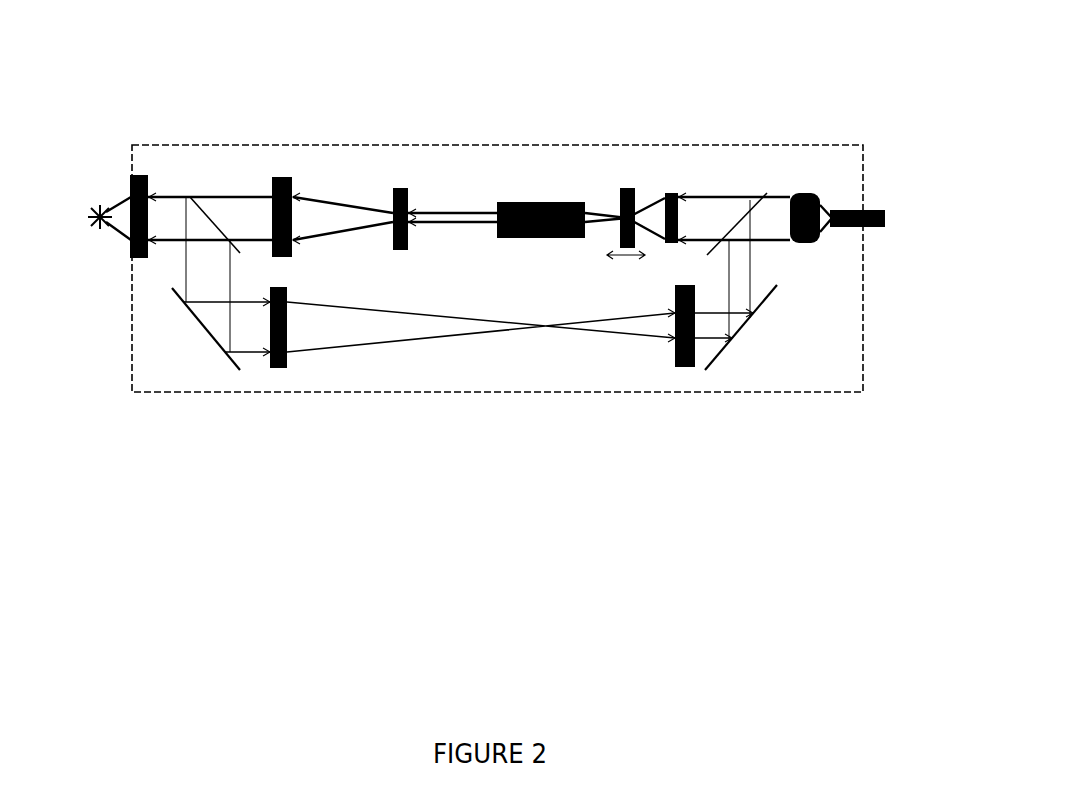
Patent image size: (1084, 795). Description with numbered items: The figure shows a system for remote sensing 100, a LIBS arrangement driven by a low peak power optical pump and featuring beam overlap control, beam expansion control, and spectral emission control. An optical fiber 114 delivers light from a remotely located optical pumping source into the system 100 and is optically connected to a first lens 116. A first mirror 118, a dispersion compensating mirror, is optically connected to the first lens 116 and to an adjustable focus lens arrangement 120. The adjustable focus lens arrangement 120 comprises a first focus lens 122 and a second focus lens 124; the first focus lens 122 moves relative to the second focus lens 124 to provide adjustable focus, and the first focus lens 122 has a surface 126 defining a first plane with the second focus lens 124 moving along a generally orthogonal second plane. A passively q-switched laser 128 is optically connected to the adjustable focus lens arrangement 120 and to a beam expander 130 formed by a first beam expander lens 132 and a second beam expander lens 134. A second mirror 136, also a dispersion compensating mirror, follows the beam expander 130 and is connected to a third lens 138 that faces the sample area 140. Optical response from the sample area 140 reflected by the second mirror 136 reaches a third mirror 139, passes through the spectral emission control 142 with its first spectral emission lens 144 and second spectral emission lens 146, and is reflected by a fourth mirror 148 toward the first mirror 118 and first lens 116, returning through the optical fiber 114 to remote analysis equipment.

The system for remote sensing 100 is at (862, 278).
The optical fiber 114 is at (858, 210).
The first lens 116 is at (822, 195).
The first mirror 118 is at (758, 195).
The adjustable focus lens arrangement 120 is at (663, 118).
The first focus lens 122 is at (676, 198).
The second focus lens 124 is at (623, 190).
The surface 126 is at (665, 215).
The passively q-switched laser 128 is at (538, 200).
The beam expander 130 is at (313, 146).
The first beam expander lens 132 is at (395, 198).
The second beam expander lens 134 is at (273, 188).
The second mirror 136 is at (191, 195).
The third lens 138 is at (132, 247).
The third mirror 139 is at (200, 327).
The sample area 140 is at (100, 200).
The spectral emission control 142 is at (472, 347).
The first spectral emission lens 144 is at (279, 368).
The second spectral emission lens 146 is at (685, 363).
The fourth mirror 148 is at (747, 320).